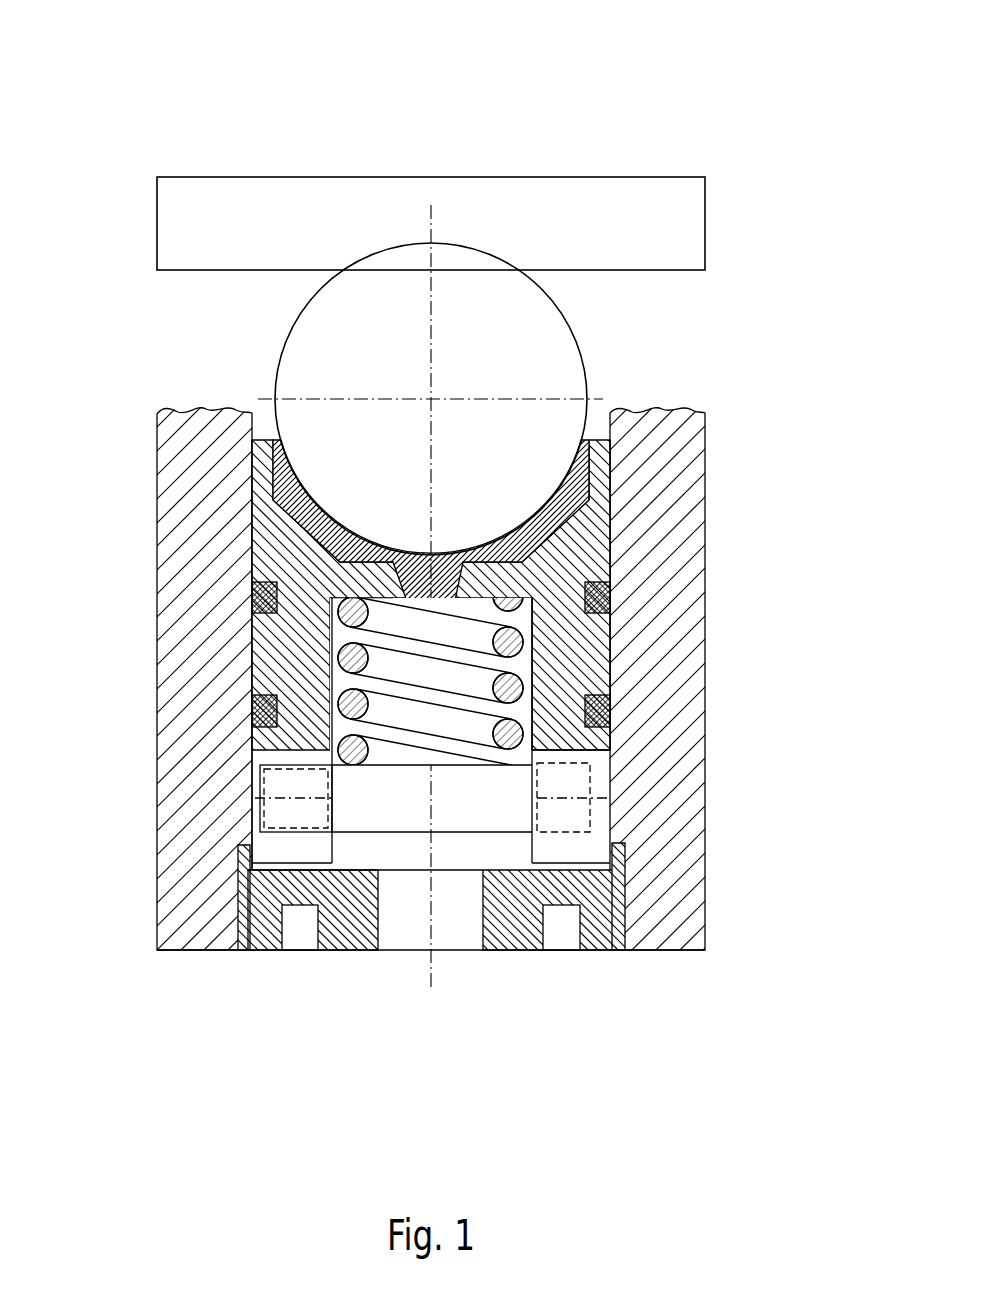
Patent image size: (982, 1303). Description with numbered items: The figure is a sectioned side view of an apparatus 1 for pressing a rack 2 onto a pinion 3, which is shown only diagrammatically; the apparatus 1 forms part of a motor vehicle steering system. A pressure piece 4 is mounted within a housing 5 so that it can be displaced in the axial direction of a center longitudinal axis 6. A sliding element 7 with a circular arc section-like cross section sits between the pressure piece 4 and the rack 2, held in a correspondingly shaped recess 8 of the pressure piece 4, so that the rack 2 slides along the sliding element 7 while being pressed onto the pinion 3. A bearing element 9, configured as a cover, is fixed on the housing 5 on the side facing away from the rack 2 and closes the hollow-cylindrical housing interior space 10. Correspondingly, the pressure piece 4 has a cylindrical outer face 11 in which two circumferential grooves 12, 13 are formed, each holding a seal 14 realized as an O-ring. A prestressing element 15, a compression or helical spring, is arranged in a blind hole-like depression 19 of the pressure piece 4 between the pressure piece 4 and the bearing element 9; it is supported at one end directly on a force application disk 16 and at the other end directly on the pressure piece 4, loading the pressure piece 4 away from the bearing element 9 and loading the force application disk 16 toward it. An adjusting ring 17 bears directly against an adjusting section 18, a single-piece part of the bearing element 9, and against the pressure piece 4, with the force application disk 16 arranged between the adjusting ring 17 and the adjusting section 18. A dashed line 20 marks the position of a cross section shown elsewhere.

The apparatus 1 is at (733, 115).
The rack 2 is at (565, 333).
The pinion 3 is at (690, 223).
The pressure piece 4 is at (582, 551).
The housing 5 is at (660, 623).
The center longitudinal axis 6 is at (431, 990).
The sliding element 7 is at (582, 512).
The recess 8 is at (597, 450).
The bearing element 9 is at (343, 893).
The housing interior space 10 is at (505, 843).
The cylindrical outer face 11 is at (622, 662).
The circumferential groove 12 is at (613, 628).
The circumferential groove 13 is at (612, 748).
The seal 14 is at (605, 596).
The prestressing element 15 is at (345, 666).
The force application disk 16 is at (350, 815).
The adjusting ring 17 is at (572, 848).
The adjusting section 18 is at (363, 950).
The blind hole-like depression 19 is at (349, 641).
The dashed line 20 is at (293, 797).